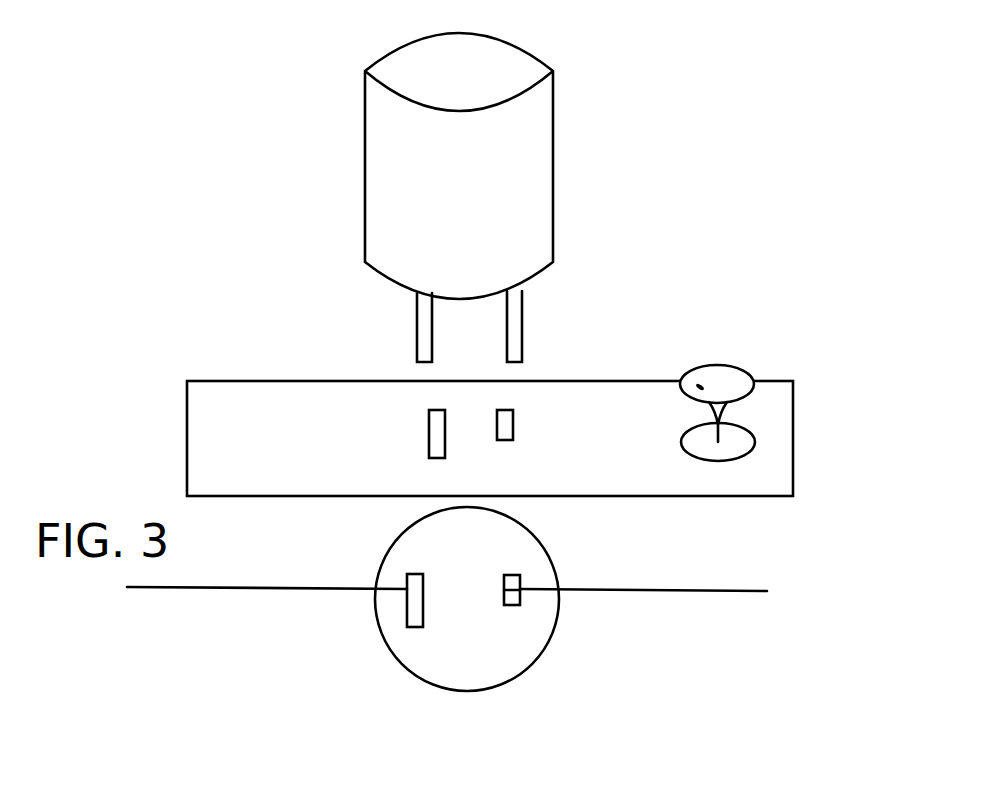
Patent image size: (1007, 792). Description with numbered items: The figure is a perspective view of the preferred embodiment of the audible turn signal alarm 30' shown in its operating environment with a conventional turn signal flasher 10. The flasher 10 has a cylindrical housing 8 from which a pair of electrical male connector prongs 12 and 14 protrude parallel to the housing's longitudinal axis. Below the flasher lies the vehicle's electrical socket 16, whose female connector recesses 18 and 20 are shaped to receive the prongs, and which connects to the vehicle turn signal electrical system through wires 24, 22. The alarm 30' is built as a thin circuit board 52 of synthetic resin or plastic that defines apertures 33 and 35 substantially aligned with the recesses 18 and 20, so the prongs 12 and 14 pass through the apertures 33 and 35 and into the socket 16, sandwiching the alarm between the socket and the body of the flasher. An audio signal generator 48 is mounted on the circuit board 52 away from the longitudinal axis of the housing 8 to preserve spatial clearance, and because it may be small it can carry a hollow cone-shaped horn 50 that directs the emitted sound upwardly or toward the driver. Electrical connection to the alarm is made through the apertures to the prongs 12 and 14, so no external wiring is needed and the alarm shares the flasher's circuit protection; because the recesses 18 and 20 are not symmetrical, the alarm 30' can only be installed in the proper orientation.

The housing 8 is at (537, 167).
The turn signal flasher 10 is at (454, 197).
The electrical male connector prong 12 is at (522, 331).
The electrical male connector prong 14 is at (417, 347).
The electrical socket 16 is at (535, 575).
The electrical female connector recess 18 is at (407, 577).
The electrical female connector recess 20 is at (515, 605).
The wire 22 is at (333, 589).
The wire 24 is at (635, 591).
The audible turn signal alarm 30' is at (467, 336).
The aperture 33 is at (415, 400).
The aperture 35 is at (525, 402).
The audio signal generator 48 is at (755, 441).
The hollow cone-shaped horn 50 is at (737, 365).
The circuit board 52 is at (187, 476).